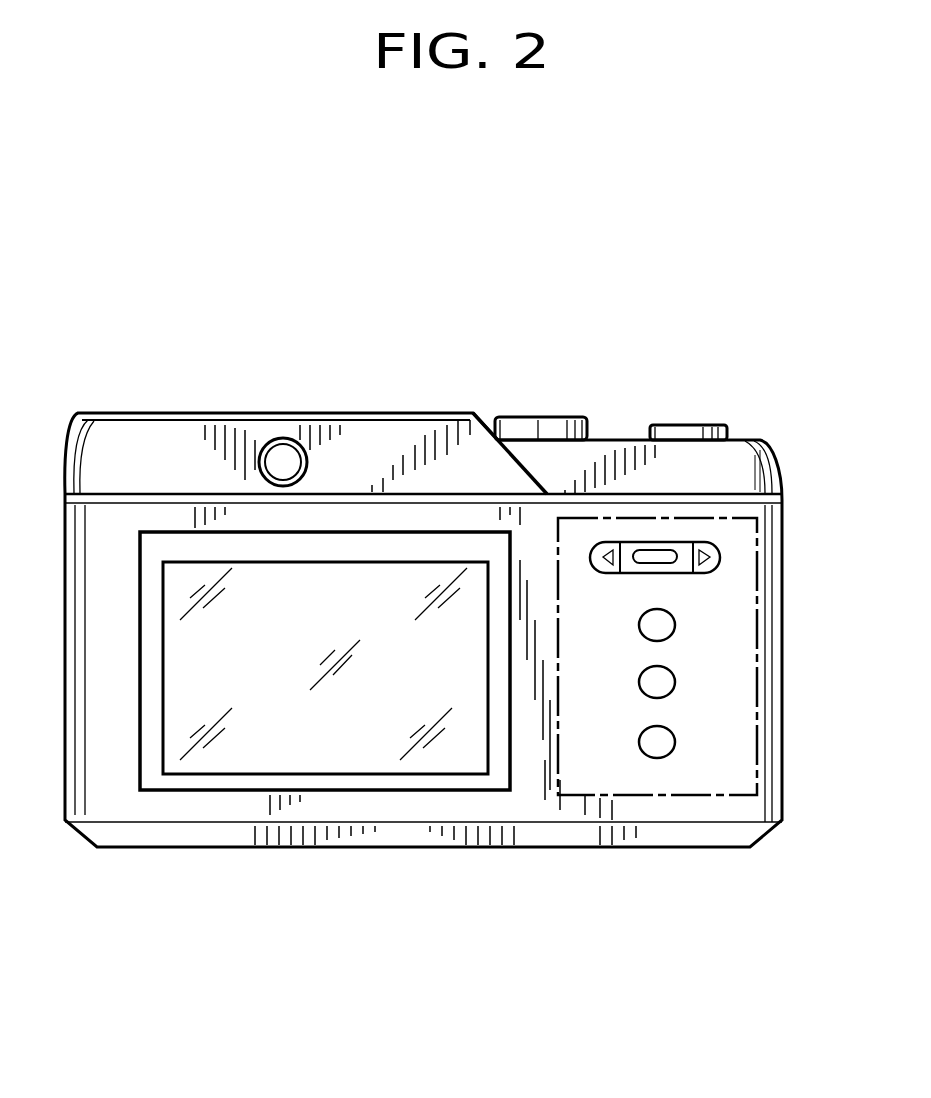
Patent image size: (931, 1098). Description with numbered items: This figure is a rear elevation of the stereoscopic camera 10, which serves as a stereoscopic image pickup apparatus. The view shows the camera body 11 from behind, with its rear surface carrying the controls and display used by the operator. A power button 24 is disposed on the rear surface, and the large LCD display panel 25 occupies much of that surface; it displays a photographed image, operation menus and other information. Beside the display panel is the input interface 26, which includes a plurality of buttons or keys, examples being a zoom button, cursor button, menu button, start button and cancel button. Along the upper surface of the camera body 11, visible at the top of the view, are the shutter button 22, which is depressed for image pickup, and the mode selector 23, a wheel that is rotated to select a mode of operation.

The stereoscopic camera 10 is at (650, 244).
The camera body 11 is at (180, 392).
The shutter button 22 is at (688, 425).
The mode selector 23 is at (540, 417).
The power button 24 is at (283, 460).
The LCD display panel 25 is at (257, 760).
The input interface 26 is at (757, 660).